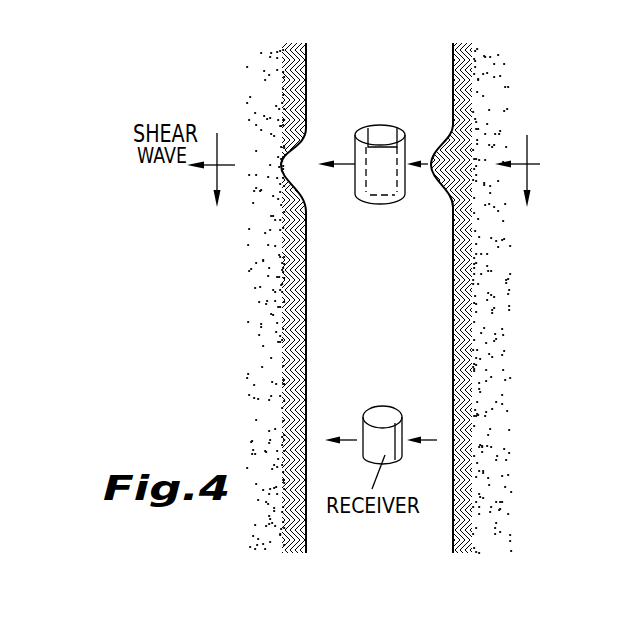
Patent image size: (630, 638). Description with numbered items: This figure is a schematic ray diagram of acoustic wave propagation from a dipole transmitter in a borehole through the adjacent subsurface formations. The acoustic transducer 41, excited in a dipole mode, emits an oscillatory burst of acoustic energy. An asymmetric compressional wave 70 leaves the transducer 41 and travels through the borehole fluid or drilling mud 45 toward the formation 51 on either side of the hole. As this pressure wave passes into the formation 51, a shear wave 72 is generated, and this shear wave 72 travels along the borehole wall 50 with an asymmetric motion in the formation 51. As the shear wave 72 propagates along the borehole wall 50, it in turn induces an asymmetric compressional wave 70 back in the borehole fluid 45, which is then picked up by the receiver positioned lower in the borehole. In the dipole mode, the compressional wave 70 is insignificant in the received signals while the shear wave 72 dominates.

The acoustic transducer 41 is at (421, 113).
The borehole fluid 45 is at (395, 308).
The borehole wall 50 is at (456, 494).
The formation 51 is at (464, 306).
The compressional wave 70 is at (346, 164).
The shear wave 72 is at (530, 185).